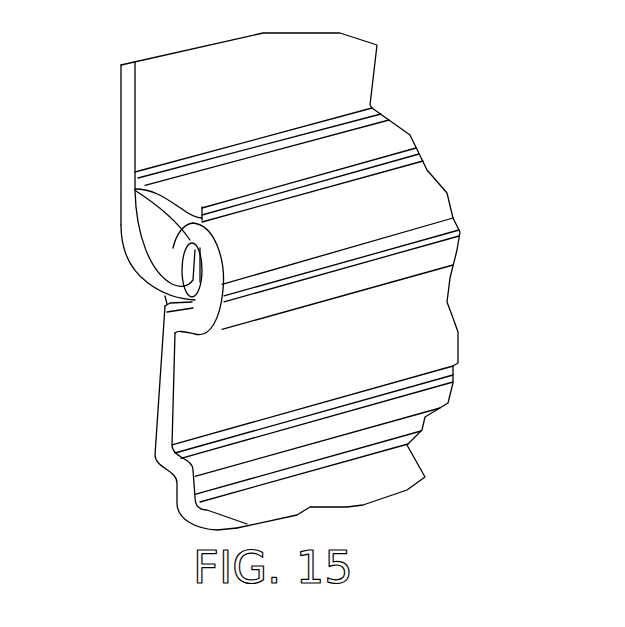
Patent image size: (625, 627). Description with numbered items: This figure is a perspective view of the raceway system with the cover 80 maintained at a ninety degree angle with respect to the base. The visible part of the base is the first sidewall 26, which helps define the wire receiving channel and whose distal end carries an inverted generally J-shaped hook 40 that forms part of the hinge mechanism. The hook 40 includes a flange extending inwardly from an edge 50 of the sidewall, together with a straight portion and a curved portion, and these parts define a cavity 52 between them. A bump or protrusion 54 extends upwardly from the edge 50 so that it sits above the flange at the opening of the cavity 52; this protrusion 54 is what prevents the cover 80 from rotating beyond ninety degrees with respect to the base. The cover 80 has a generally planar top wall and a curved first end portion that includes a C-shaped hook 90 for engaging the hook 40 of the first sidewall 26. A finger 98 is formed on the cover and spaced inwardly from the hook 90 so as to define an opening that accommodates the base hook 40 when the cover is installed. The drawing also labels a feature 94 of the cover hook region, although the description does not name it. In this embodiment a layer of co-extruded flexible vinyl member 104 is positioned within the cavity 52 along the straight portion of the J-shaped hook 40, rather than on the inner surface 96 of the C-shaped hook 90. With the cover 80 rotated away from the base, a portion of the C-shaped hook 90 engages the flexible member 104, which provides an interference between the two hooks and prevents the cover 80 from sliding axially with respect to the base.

The first sidewall 26 is at (160, 418).
The hook 40 is at (423, 197).
The edge 50 is at (165, 311).
The cavity 52 is at (222, 239).
The protrusion 54 is at (165, 298).
The cover 80 is at (121, 121).
The hook 90 is at (122, 232).
The lip 94 is at (180, 305).
The inner surface 96 is at (193, 262).
The finger 98 is at (388, 133).
The flexible member 104 is at (190, 260).